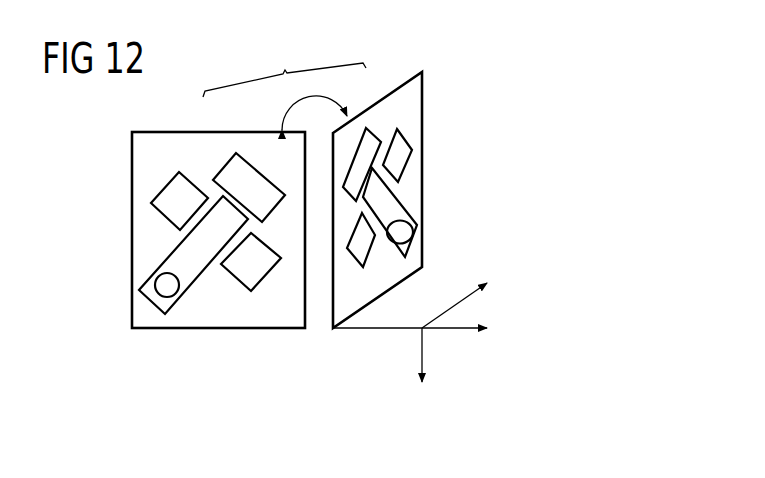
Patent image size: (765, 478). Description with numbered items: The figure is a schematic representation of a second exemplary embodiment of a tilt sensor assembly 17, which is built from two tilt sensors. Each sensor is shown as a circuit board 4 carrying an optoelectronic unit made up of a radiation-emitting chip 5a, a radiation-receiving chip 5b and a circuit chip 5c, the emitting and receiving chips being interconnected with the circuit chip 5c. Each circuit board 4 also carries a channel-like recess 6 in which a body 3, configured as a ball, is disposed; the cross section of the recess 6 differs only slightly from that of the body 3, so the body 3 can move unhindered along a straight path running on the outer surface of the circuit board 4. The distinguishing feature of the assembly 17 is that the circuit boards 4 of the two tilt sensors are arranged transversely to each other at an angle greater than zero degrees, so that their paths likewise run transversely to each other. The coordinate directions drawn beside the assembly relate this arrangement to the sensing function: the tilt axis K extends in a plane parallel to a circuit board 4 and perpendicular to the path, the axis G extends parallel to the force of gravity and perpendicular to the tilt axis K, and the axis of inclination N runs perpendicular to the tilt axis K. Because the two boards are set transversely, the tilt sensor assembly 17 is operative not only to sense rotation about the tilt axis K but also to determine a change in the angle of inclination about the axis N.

The body 3 is at (155, 285).
The circuit board 4 is at (143, 225).
The radiation-emitting chip 5a is at (172, 195).
The radiation-receiving chip 5b is at (260, 265).
The circuit chip 5c is at (248, 175).
The recess 6 is at (195, 262).
The tilt sensor assembly 17 is at (284, 69).
The tilt axis K is at (463, 297).
The axis of inclination N is at (463, 328).
The axis G is at (434, 358).